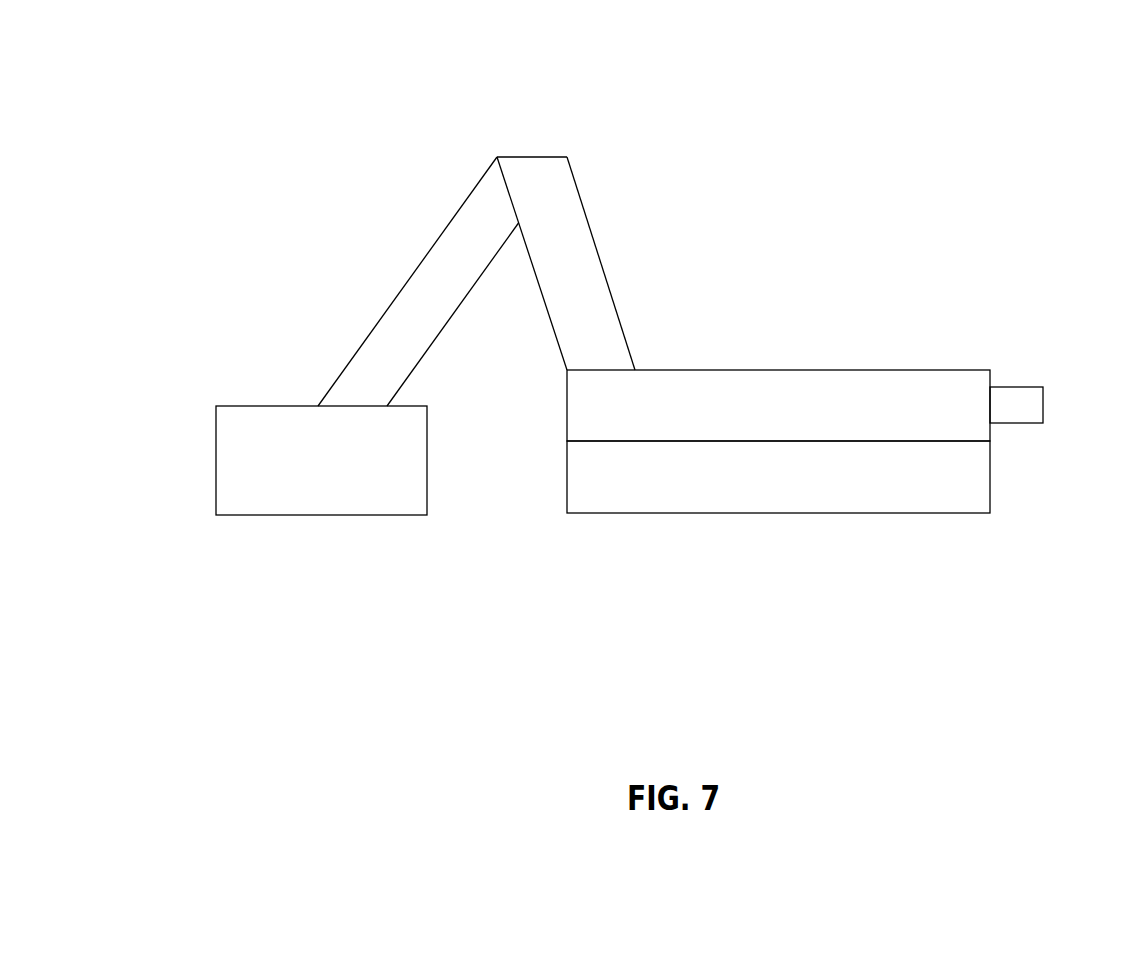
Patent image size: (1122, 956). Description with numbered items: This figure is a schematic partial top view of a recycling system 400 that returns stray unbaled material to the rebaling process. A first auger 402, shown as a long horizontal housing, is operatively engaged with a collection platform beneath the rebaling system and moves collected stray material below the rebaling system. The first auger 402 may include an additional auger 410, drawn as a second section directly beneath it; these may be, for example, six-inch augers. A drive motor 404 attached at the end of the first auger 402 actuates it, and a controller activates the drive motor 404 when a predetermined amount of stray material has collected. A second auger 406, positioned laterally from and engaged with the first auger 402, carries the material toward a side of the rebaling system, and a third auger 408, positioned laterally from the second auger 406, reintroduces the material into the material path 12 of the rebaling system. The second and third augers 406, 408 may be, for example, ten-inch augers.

The recycling system 400 is at (757, 164).
The material path 12 is at (334, 470).
The third auger 408 is at (418, 281).
The second auger 406 is at (566, 263).
The first auger 402 is at (778, 405).
The additional auger 410 is at (778, 477).
The drive motor 404 is at (1043, 405).